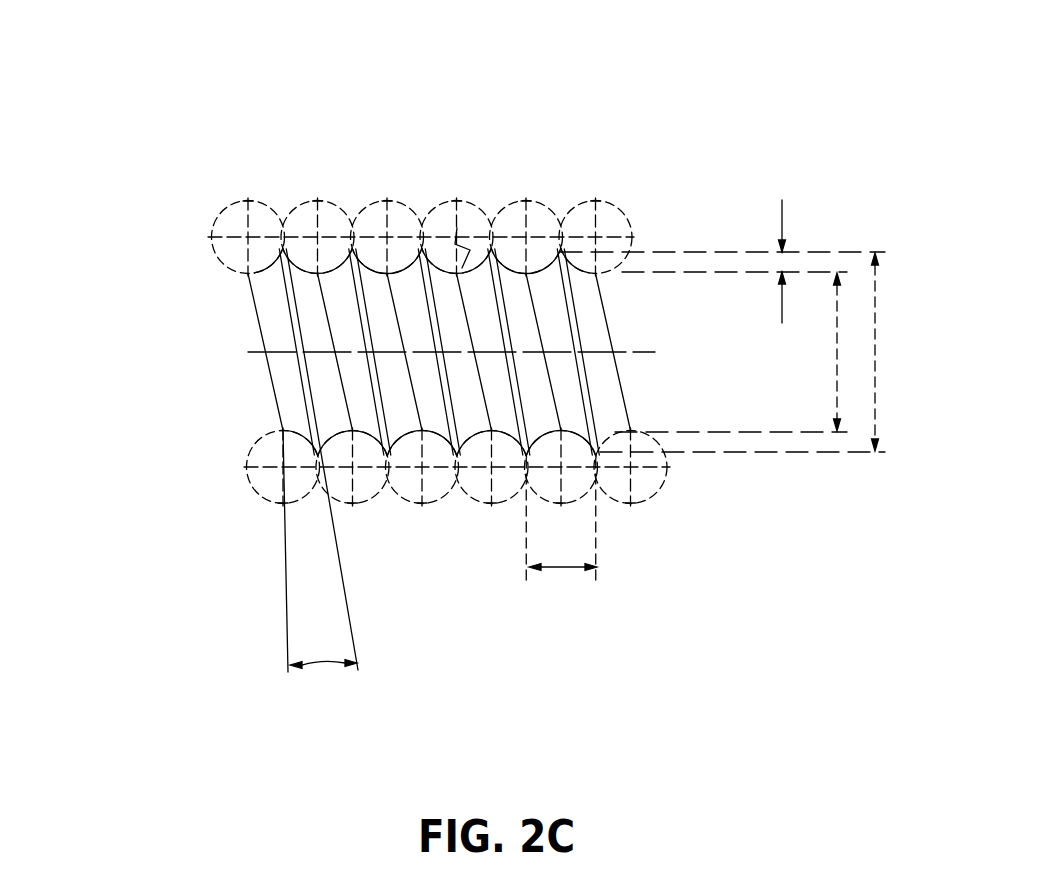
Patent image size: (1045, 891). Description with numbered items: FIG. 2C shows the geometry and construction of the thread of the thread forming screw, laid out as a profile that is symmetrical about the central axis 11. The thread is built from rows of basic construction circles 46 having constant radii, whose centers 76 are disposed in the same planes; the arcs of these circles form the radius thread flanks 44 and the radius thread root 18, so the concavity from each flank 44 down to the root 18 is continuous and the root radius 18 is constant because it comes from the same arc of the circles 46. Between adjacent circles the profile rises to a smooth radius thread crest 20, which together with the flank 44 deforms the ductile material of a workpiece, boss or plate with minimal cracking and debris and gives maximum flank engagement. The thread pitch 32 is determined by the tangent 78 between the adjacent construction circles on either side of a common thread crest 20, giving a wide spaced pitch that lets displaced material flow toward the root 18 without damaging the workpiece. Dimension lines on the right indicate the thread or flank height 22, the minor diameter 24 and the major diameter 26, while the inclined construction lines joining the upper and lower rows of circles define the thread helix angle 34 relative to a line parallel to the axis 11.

The central axis 11 is at (235, 350).
The thread root 18 is at (321, 248).
The thread crest 20 is at (352, 234).
The flank height 22 is at (770, 248).
The minor diameter 24 is at (829, 324).
The major diameter 26 is at (868, 340).
The thread pitch 32 is at (562, 581).
The thread helix angle 34 is at (325, 681).
The thread flank 44 is at (508, 248).
The construction circle 46 is at (440, 186).
The center of construction circle 76 is at (464, 216).
The tangent 78 is at (592, 474).